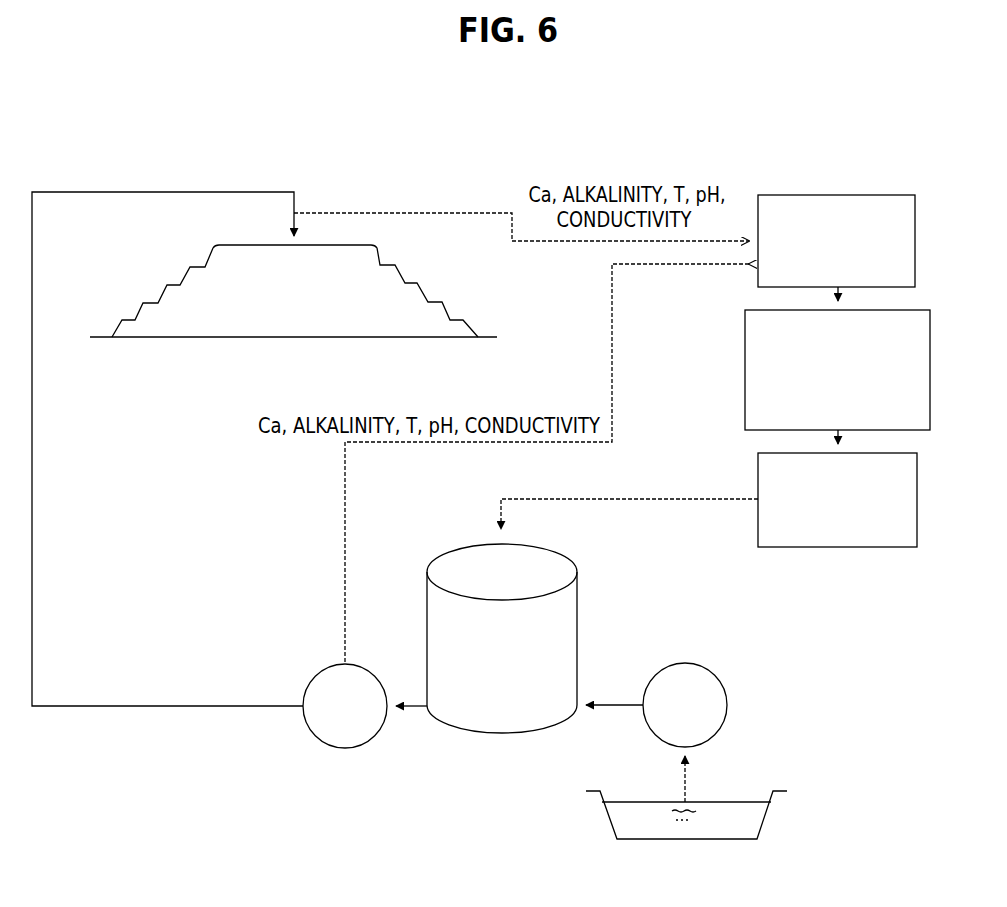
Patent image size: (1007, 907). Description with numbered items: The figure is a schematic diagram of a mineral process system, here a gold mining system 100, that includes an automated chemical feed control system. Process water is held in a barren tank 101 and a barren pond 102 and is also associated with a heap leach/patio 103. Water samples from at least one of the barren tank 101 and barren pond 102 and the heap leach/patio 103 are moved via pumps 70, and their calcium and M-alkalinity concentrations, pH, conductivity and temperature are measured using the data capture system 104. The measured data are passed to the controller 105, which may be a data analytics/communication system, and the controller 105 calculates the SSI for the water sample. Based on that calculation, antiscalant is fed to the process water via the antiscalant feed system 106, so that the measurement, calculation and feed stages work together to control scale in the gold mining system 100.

The gold mining system 100 is at (829, 618).
The barren tank 101 is at (502, 638).
The barren pond 102 is at (765, 814).
The heap leach/patio 103 is at (293, 291).
The data capture system 104 is at (836, 241).
The controller 105 is at (837, 370).
The antiscalant feed system 106 is at (837, 500).
The pump 70 is at (515, 705).